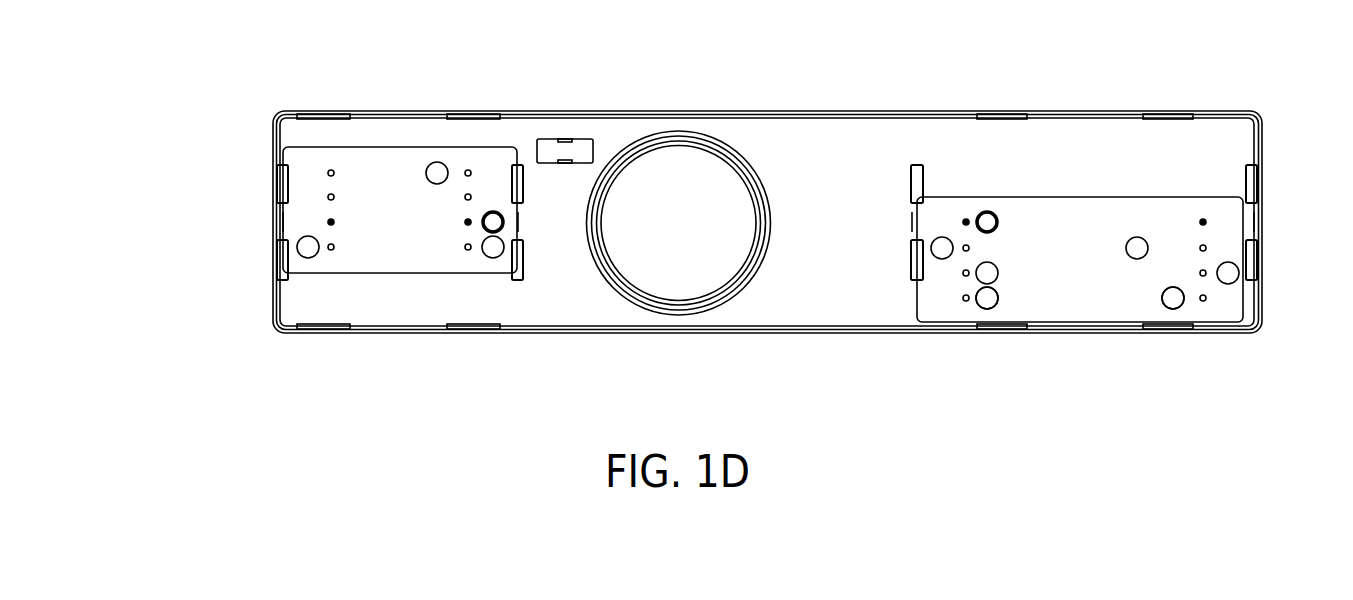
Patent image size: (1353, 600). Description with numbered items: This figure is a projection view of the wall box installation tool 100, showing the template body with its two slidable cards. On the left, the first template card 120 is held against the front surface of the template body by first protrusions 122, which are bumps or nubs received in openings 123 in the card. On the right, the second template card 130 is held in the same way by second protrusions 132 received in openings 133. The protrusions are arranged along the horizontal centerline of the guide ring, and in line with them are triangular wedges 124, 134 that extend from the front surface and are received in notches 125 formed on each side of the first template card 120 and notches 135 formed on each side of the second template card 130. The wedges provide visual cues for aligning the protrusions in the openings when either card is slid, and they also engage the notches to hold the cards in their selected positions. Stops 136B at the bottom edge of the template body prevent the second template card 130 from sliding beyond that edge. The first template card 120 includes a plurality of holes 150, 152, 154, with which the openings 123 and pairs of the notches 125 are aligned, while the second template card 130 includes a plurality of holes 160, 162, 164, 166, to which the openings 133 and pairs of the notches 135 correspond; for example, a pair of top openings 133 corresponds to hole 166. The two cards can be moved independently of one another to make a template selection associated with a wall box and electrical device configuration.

The mounting device 100 is at (205, 88).
The first template card 120 is at (384, 178).
The first protrusions 122 is at (336, 218).
The openings 123 is at (328, 246).
The triangular wedges 124 is at (282, 222).
The notches 125 is at (511, 200).
The second template card 130 is at (1111, 282).
The second protrusions 132 is at (967, 214).
The openings 133 is at (1206, 298).
The triangular wedges 134 is at (1256, 222).
The notches 135 is at (928, 203).
The stops 136B is at (988, 309).
The hole 150 is at (308, 258).
The hole 152 is at (493, 211).
The hole 154 is at (437, 162).
The hole 160 is at (983, 309).
The hole 162 is at (997, 279).
The hole 164 is at (942, 237).
The hole 166 is at (990, 212).